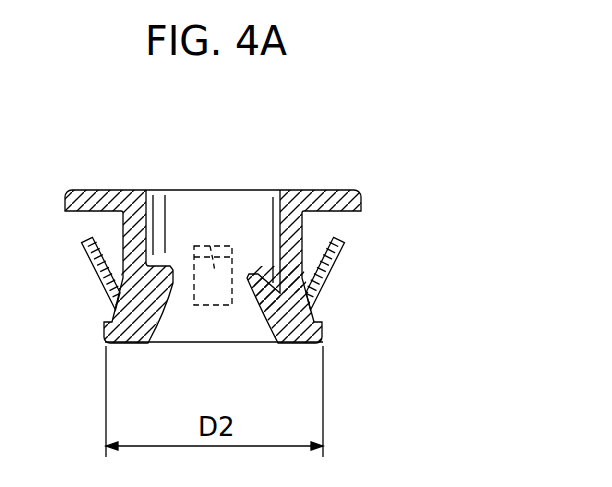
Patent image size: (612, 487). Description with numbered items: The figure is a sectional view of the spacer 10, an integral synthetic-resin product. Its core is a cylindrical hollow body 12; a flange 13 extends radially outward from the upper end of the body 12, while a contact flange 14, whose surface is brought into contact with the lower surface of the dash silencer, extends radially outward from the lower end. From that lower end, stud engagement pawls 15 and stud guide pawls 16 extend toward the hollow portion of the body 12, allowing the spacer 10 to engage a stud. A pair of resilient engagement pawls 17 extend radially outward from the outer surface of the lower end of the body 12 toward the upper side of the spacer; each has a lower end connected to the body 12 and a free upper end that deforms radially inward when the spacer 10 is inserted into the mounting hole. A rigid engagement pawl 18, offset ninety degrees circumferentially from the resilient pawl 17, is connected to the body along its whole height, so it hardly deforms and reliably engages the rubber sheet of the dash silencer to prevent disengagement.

The spacer 10 is at (245, 182).
The body 12 is at (300, 228).
The flange 13 is at (340, 190).
The contact flange 14 is at (310, 341).
The stud engagement pawls 15 is at (246, 282).
The stud guide pawls 16 is at (172, 272).
The resilient engagement pawls 17 is at (88, 257).
The rigid engagement pawls 18 is at (210, 246).